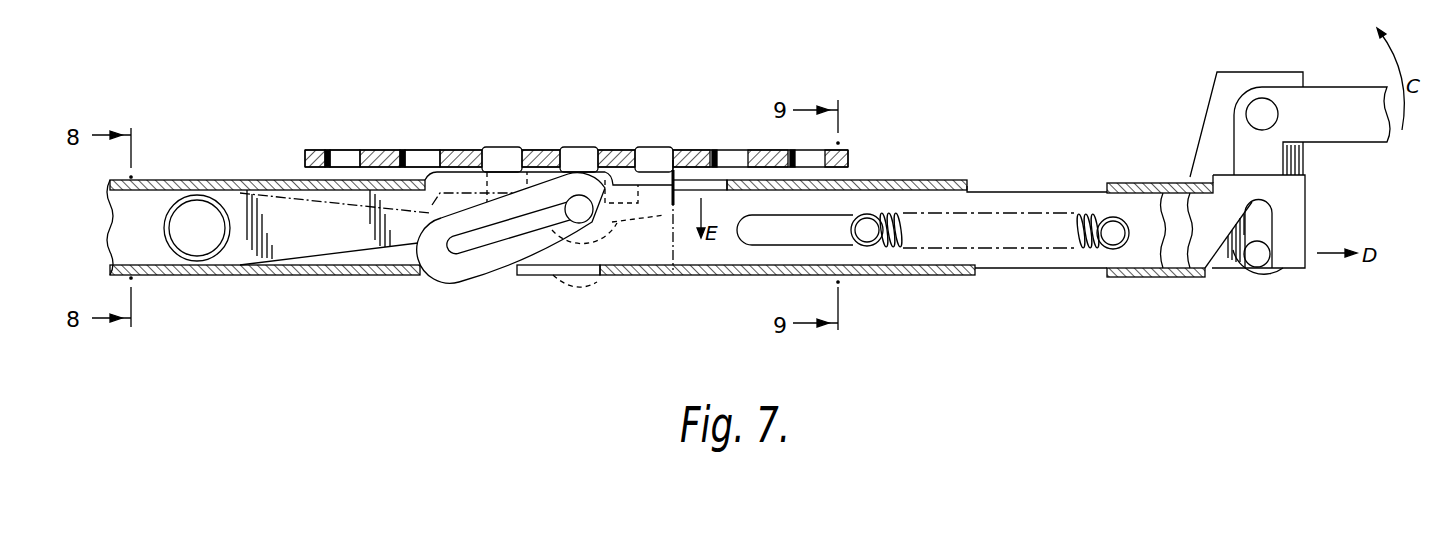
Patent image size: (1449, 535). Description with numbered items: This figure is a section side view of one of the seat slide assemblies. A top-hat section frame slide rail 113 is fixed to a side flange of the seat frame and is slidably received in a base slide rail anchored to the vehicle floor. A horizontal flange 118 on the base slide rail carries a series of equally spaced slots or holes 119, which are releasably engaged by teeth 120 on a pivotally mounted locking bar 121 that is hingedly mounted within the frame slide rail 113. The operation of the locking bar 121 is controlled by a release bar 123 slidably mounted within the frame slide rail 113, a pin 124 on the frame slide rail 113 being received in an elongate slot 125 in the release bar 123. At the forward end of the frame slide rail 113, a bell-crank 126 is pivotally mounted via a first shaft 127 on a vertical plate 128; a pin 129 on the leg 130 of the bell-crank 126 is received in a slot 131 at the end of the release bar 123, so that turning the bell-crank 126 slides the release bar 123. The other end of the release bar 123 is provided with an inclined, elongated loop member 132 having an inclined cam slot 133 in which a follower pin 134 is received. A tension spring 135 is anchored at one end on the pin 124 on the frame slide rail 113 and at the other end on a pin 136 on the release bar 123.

The frame slide rail 113 is at (217, 276).
The horizontal flange 118 is at (300, 157).
The slots or holes 119 is at (418, 155).
The teeth 120 is at (650, 155).
The locking bar 121 is at (318, 232).
The release bar 123 is at (1027, 190).
The pin 124 is at (872, 233).
The elongate slot 125 is at (750, 232).
The bell-crank 126 is at (1335, 85).
The first shaft 127 is at (1262, 108).
The vertical plate 128 is at (1220, 72).
The pin 129 is at (1253, 257).
The leg 130 is at (1280, 290).
The slot 131 is at (1270, 225).
The inclined, elongated loop member 132 is at (443, 275).
The inclined cam slot 133 is at (483, 253).
The follower pin 134 is at (580, 212).
The tension spring 135 is at (1022, 250).
The pin 136 is at (1113, 233).